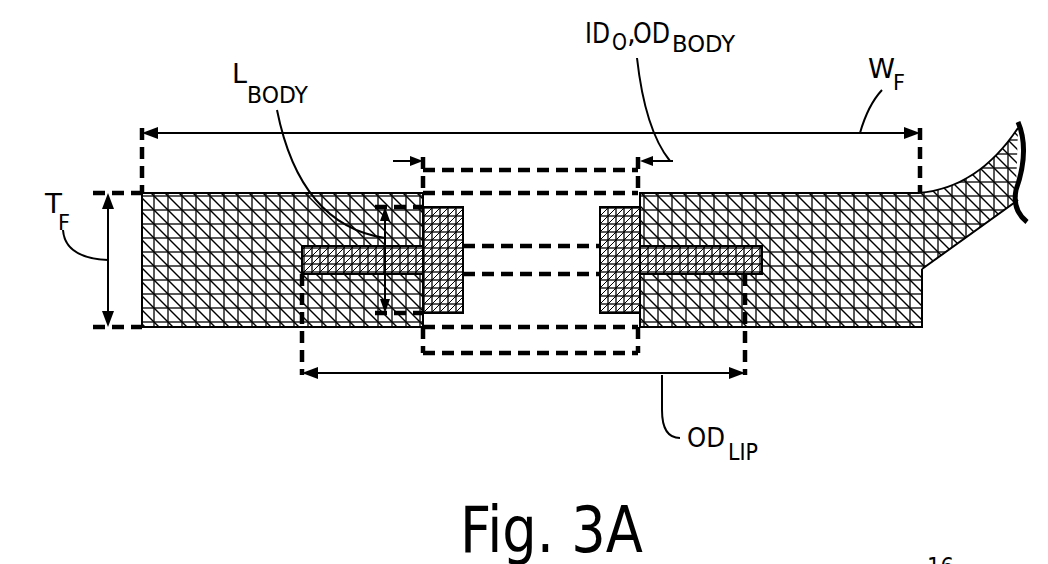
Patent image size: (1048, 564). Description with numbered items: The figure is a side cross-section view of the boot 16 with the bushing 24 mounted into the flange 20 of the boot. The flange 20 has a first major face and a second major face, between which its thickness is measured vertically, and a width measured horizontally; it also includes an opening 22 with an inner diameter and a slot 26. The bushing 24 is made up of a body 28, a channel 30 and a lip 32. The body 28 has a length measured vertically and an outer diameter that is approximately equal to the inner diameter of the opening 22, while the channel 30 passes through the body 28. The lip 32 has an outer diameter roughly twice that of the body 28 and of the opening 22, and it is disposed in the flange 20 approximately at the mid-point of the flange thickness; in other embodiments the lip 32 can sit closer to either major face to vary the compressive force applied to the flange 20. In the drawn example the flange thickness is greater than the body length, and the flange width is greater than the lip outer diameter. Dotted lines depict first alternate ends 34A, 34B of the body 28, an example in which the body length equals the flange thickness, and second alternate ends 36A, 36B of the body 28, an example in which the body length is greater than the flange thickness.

The boot 16 is at (938, 288).
The flange 20 is at (218, 328).
The opening 22 is at (640, 228).
The bushing 24 is at (516, 304).
The slot 26 is at (728, 245).
The body 28 is at (622, 268).
The channel 30 is at (498, 220).
The lip 32 is at (743, 262).
The first alternate end 34A is at (538, 193).
The first alternate end 34B is at (557, 332).
The second alternate end 36A is at (468, 167).
The second alternate end 36B is at (447, 355).